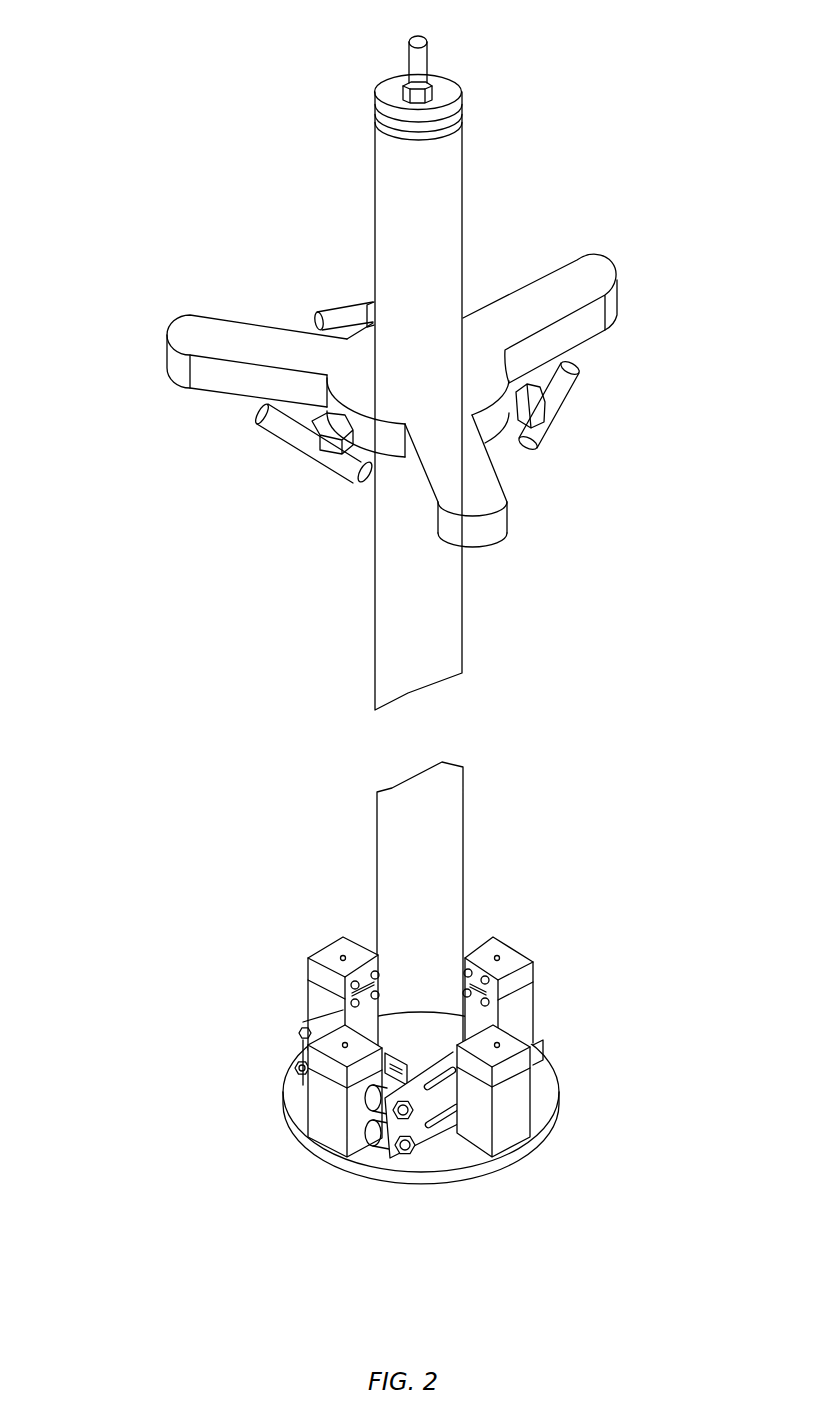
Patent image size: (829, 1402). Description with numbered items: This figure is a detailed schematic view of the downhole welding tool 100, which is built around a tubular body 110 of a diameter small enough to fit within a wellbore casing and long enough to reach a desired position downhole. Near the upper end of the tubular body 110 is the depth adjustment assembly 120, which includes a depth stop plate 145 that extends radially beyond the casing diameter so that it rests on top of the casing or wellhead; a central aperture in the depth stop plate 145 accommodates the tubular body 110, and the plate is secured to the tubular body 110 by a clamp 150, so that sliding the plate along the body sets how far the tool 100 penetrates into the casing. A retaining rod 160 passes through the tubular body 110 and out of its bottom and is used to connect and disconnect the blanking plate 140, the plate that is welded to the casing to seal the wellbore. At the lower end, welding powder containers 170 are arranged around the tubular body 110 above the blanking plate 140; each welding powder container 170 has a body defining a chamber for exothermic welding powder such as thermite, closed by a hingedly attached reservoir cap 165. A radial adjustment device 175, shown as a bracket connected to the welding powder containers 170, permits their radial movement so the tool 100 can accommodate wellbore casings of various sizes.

The downhole welding tool 100 is at (404, 622).
The tubular body 110 is at (476, 645).
The depth adjustment assembly 120 is at (385, 372).
The blanking plate 140 is at (277, 1133).
The depth stop plate 145 is at (619, 254).
The clamp 150 is at (573, 423).
The retaining rod 160 is at (442, 51).
The reservoir cap 165 is at (297, 956).
The welding powder container 170 is at (552, 1003).
The radial adjustment device 175 is at (438, 1146).